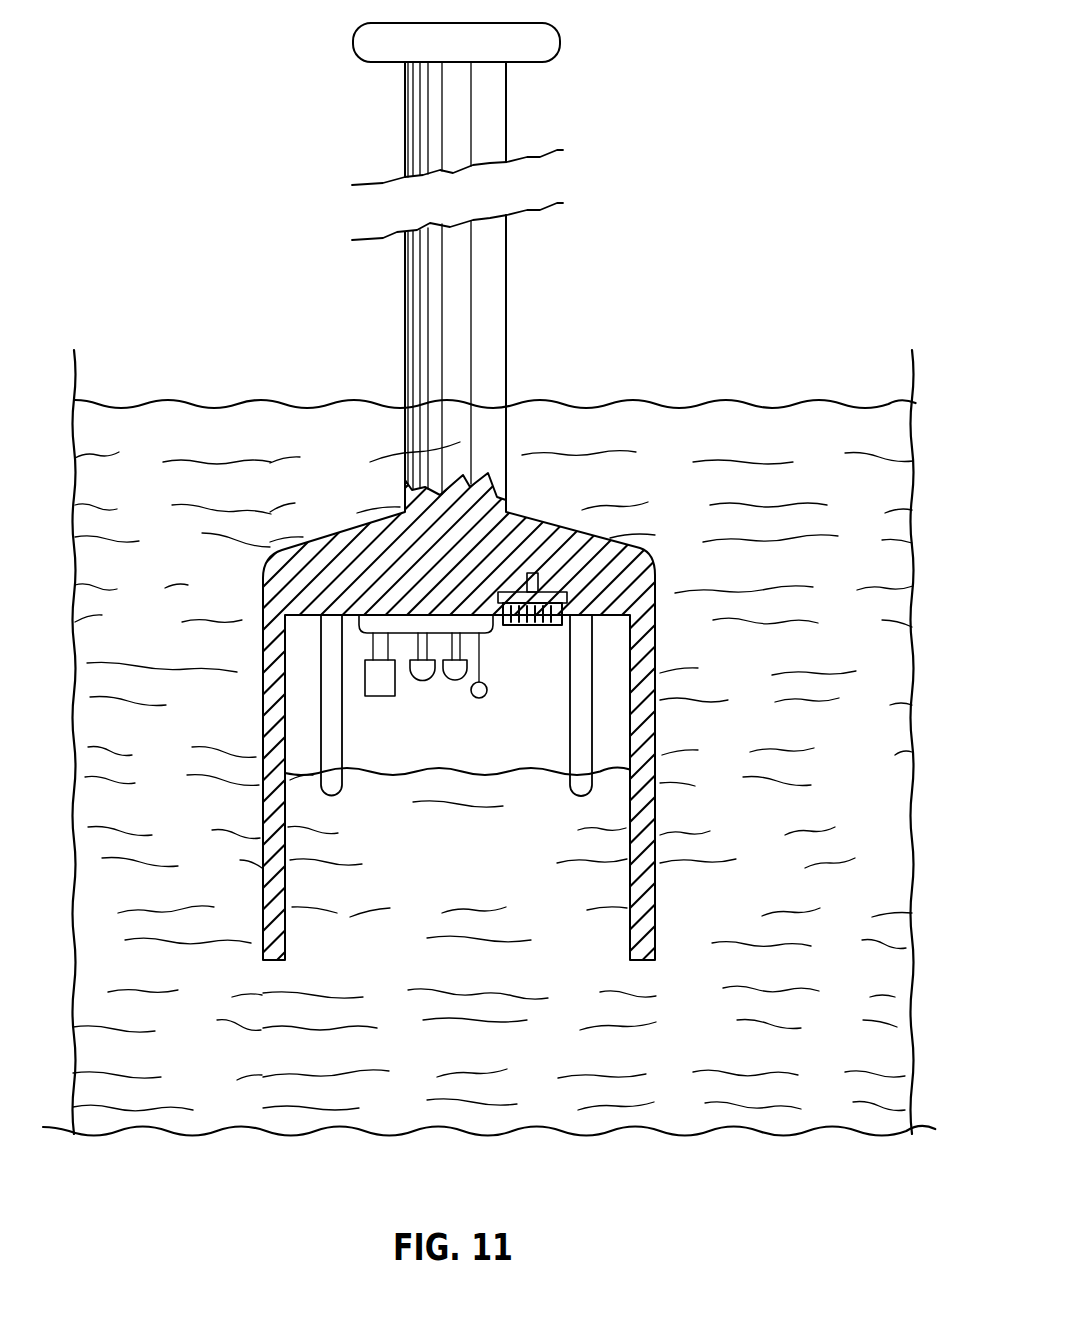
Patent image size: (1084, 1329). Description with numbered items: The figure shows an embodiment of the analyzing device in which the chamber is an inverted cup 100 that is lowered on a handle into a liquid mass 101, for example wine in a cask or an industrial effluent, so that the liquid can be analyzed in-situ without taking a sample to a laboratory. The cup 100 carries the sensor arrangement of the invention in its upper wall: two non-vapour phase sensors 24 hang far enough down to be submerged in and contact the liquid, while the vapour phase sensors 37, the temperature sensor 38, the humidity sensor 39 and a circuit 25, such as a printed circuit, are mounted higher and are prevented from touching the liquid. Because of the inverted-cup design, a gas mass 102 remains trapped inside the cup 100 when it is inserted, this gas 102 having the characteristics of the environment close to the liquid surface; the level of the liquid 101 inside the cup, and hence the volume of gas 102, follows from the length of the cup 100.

The inverted cup 100 is at (712, 808).
The liquid mass 101 is at (165, 637).
The gas mass 102 is at (528, 746).
The non-vapour phase sensors 24 is at (326, 822).
The circuit 25 is at (531, 626).
The vapour phase sensors 37 is at (445, 694).
The temperature sensor 38 is at (471, 710).
The humidity sensor 39 is at (378, 698).